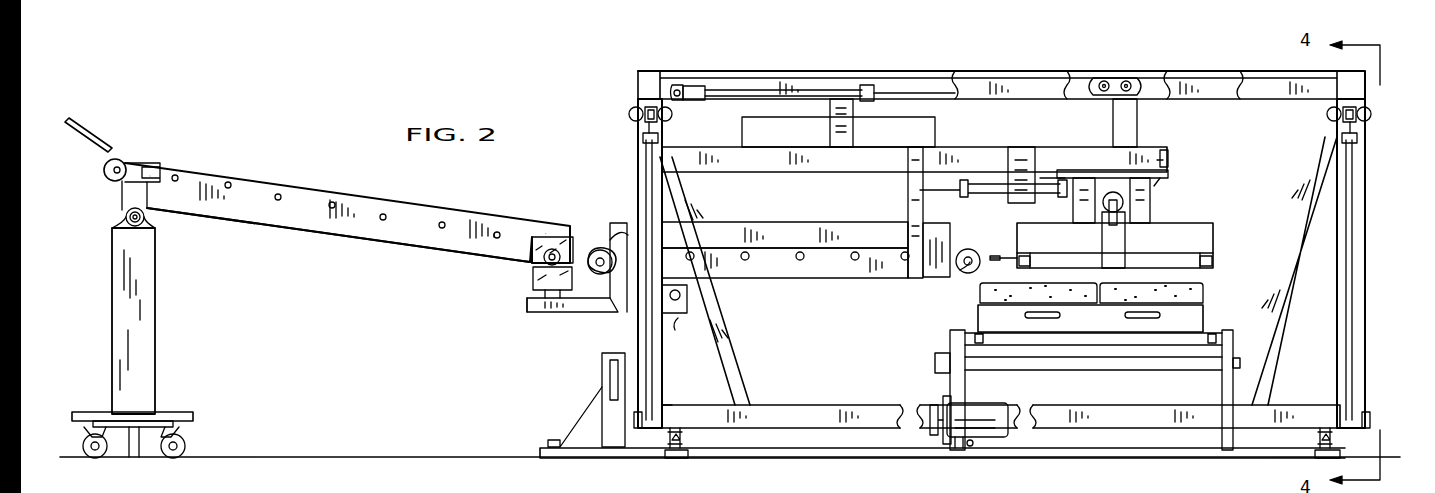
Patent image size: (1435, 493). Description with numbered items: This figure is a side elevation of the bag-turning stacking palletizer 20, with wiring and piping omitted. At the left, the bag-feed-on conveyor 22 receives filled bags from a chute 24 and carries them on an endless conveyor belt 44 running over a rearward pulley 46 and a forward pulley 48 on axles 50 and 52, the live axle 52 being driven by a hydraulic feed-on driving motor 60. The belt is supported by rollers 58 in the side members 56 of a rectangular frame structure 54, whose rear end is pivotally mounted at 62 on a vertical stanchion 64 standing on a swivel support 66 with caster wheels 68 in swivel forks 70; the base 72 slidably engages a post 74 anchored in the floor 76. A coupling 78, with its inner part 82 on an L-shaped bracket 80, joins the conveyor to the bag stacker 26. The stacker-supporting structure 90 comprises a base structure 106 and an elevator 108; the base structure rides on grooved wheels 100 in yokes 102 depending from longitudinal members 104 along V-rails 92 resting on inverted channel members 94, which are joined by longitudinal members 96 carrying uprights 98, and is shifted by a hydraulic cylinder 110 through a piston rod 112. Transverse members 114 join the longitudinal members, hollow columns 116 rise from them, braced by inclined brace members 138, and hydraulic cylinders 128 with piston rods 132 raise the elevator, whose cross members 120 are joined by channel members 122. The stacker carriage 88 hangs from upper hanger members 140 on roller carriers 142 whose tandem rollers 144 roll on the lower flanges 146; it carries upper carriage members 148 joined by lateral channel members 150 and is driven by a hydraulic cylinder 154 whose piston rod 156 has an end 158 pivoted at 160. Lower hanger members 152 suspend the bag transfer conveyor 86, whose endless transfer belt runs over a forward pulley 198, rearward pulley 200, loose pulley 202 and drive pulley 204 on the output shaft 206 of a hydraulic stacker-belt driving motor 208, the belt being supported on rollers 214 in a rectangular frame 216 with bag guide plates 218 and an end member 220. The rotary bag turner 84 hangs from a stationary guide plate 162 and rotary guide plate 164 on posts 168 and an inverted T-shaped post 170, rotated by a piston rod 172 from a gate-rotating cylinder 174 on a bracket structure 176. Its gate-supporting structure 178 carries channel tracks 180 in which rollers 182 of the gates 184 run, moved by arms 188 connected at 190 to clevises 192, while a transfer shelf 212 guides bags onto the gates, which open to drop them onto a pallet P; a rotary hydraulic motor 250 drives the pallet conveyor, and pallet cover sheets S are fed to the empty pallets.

The bag-turning stacking palletizer 20 is at (638, 68).
The bag-feed-on conveyor 22 is at (316, 176).
The chute 24 is at (107, 138).
The bag stacker 26 is at (630, 92).
The endless conveyor belt 44 is at (103, 178).
The rearward pulley 46 is at (104, 172).
The forward pulley 48 is at (532, 283).
The axle 50 is at (126, 163).
The live axle 52 is at (560, 238).
The frame structure 54 is at (378, 196).
The side members 56 is at (368, 238).
The rollers 58 is at (232, 176).
The hydraulic feed-on driving motor 60 is at (568, 242).
The pivotal mounting 62 is at (123, 218).
The vertical stanchion 64 is at (155, 310).
The swivel support 66 is at (168, 414).
The caster wheels 68 is at (82, 448).
The swivel forks 70 is at (82, 428).
The base 72 is at (120, 455).
The post 74 is at (147, 458).
The floor 76 is at (328, 456).
The coupling 78 is at (535, 288).
The L-shaped bracket 80 is at (571, 314).
The inner part of pivotal coupling 82 is at (540, 312).
The rotary bag turner 84 is at (1210, 223).
The bag transfer conveyor 86 is at (778, 220).
The stacker carriage 88 is at (1172, 145).
The stacker-supporting structure 90 is at (634, 191).
The V-rails 92 is at (684, 441).
The inverted channel members 94 is at (686, 458).
The longitudinal members 96 is at (1100, 458).
The uprights 98 is at (604, 436).
The grooved wheels 100 is at (667, 439).
The wheel supports 102 is at (686, 409).
The longitudinal members of stacker-supporting structure 104 is at (777, 412).
The base structure 106 is at (636, 336).
The vertically-movable structure 108 is at (727, 108).
The hydraulic cylinder 110 is at (974, 448).
The piston rod 112 is at (955, 448).
The transverse members 114 is at (636, 418).
The hollow columns 116 is at (636, 172).
The cross members 120 is at (636, 101).
The longitudinal channel members 122 is at (1254, 98).
The hydraulic cylinders 128 is at (647, 157).
The piston rods 132 is at (643, 120).
The inclined brace members 138 is at (736, 350).
The upper hanger members 140 is at (1148, 120).
The roller carriers 142 is at (1118, 74).
The tandem rollers 144 is at (1103, 98).
The lower flanges 146 is at (1074, 98).
The upper carriage members 148 is at (862, 166).
The lateral channel members 150 is at (1169, 158).
The lower hanger members 152 is at (908, 212).
The hydraulic cylinder 154 is at (915, 94).
The piston rod 156 is at (810, 89).
The opposite end of piston rod 158 is at (695, 85).
The pivotal connection 160 is at (676, 84).
The stationary guide plate 162 is at (1170, 173).
The rotary guide plate 164 is at (1163, 182).
The posts 168 is at (1150, 208).
The inverted T-shaped post 170 is at (1110, 182).
The piston rod 172 is at (1067, 198).
The hydraulic gate-rotating cylinder 174 is at (980, 182).
The bracket structure 176 is at (1014, 150).
The gate-supporting structure 178 is at (1022, 224).
The channel tracks 180 is at (1015, 266).
The rollers 182 is at (1033, 262).
The gates 184 is at (1150, 264).
The arms 188 is at (1126, 241).
The connection 190 is at (1108, 230).
The clevises 192 is at (1100, 194).
The forward pulley 198 is at (968, 275).
The rearward pulley 200 is at (600, 266).
The loose pulley 202 is at (625, 226).
The drive pulley 204 is at (688, 305).
The output shaft 206 is at (708, 320).
The hydraulic stacker-belt driving motor 208 is at (680, 294).
The bag transfer shelf 212 is at (1000, 258).
The rollers 214 is at (804, 260).
The rectangular supporting frame 216 is at (870, 278).
The bag guide plates 218 is at (802, 228).
The end member 220 is at (934, 224).
The rotary hydraulic motor 250 is at (986, 411).
The pallet cover sheets S is at (974, 310).
The pallet P is at (1210, 330).